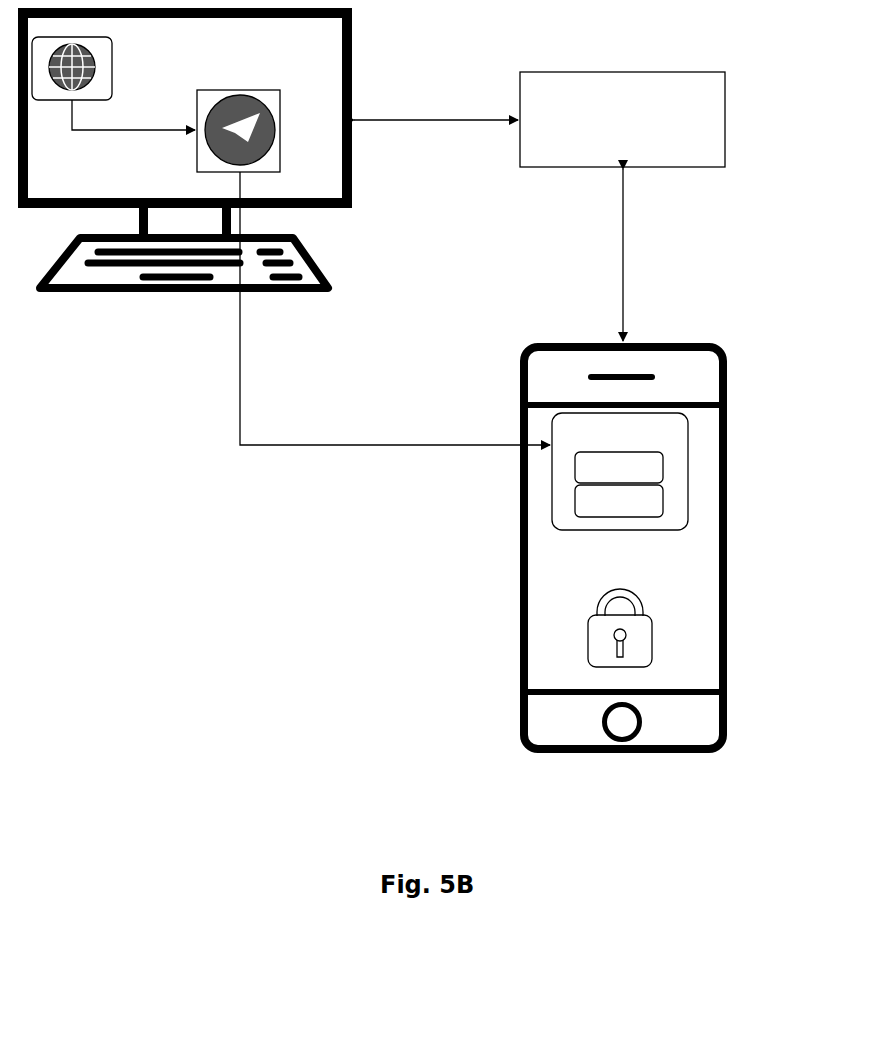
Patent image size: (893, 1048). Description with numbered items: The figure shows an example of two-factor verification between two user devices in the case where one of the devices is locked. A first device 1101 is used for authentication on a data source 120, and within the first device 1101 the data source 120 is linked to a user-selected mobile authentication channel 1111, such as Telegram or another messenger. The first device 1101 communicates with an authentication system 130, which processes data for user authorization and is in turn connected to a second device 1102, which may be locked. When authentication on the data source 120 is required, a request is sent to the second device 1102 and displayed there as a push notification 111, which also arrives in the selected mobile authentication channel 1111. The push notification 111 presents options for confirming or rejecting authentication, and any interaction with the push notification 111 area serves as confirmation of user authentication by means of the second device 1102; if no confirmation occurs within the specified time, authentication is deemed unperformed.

The first device 1101 is at (353, 157).
The data source 120 is at (115, 78).
The mobile authentication channel 1111 is at (232, 90).
The authentication system 130 is at (622, 119).
The second device 1102 is at (717, 385).
The push notification 111 is at (563, 463).